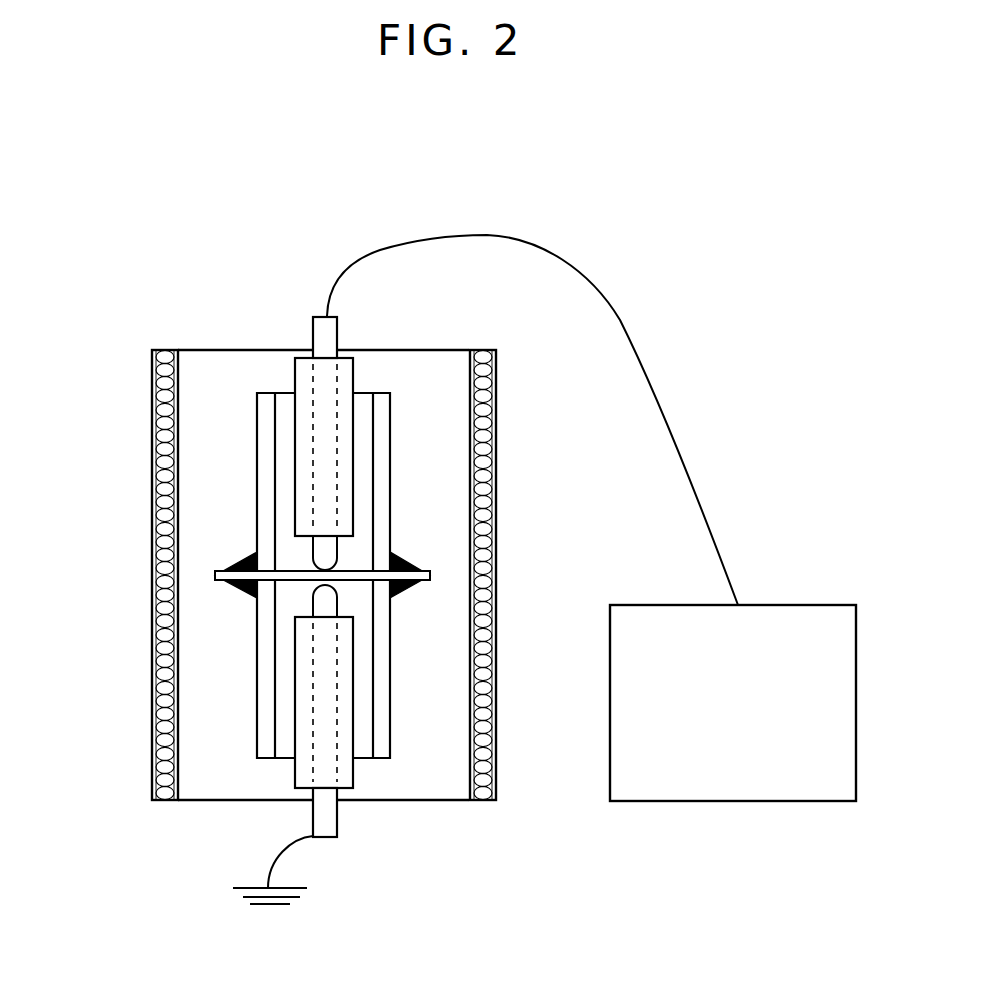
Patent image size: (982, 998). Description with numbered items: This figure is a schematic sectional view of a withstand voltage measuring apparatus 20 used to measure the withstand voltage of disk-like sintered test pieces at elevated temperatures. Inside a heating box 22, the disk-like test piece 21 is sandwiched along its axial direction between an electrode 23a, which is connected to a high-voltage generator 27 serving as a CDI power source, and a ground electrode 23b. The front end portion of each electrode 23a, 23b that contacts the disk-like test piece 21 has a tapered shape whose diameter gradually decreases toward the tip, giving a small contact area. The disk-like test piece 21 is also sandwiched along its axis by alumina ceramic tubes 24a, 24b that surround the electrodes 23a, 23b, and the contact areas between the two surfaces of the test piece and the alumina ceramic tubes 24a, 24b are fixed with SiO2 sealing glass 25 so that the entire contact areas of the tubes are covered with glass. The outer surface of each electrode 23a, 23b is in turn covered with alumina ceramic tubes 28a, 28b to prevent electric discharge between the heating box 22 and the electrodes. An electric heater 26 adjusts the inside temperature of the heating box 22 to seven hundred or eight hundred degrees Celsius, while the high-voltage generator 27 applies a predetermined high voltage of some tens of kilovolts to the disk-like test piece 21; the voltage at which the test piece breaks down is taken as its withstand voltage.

The withstand voltage measuring apparatus 20 is at (190, 245).
The disk-like test piece 21 is at (432, 573).
The heating box 22 is at (482, 824).
The electrode 23a is at (314, 330).
The ground electrode 23b is at (320, 819).
The alumina ceramic tube 24a is at (263, 420).
The alumina ceramic tube 24b is at (263, 743).
The SiO2 sealing glass 25 is at (238, 558).
The electric heater 26 is at (137, 436).
The high-voltage generator 27 is at (695, 775).
The alumina ceramic tube 28a is at (347, 370).
The alumina ceramic tube 28b is at (347, 778).